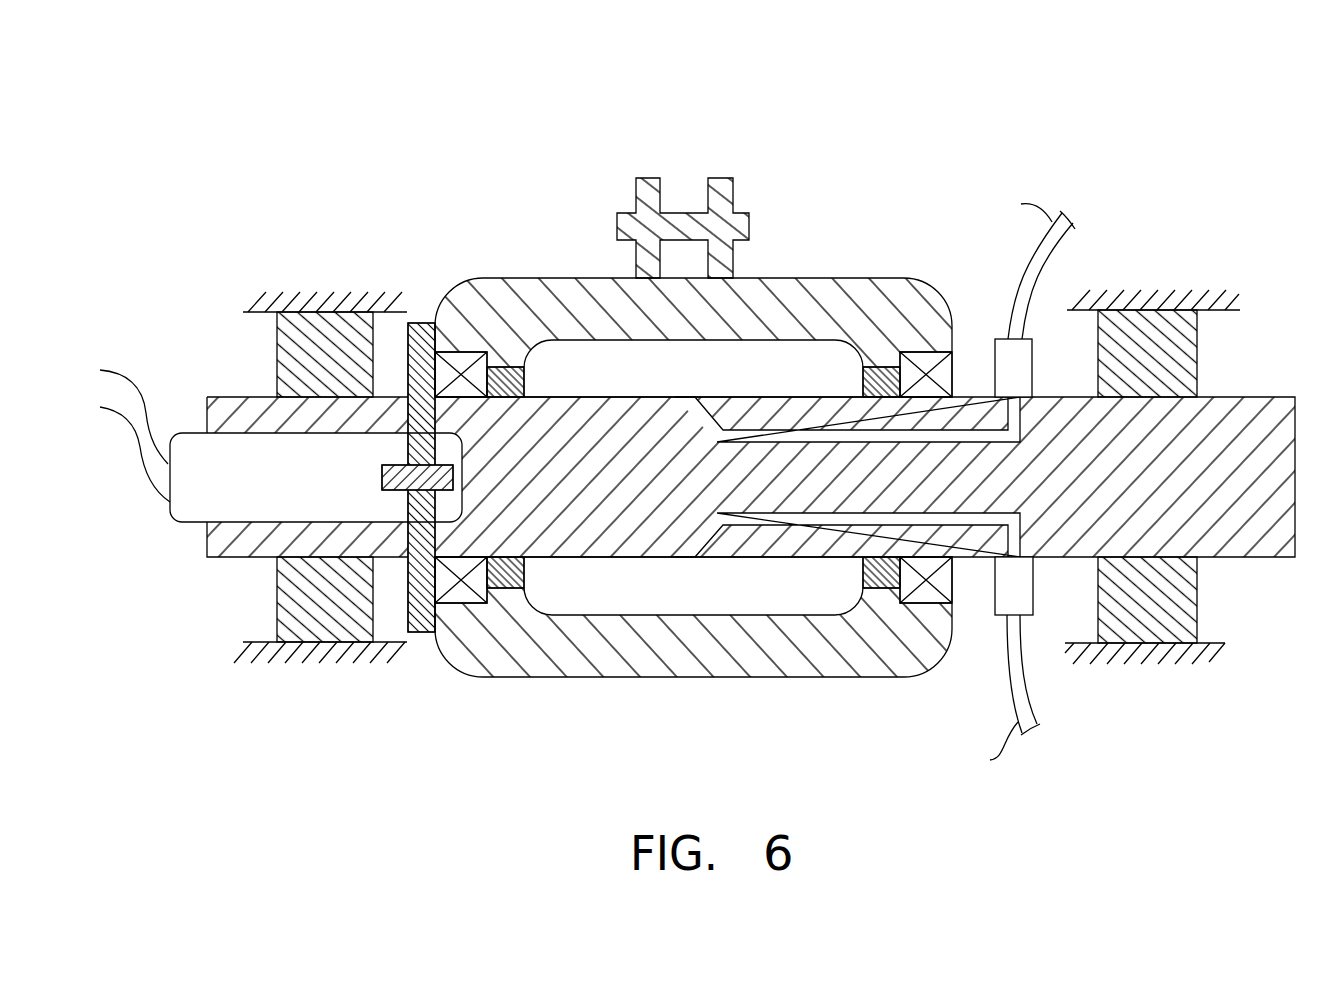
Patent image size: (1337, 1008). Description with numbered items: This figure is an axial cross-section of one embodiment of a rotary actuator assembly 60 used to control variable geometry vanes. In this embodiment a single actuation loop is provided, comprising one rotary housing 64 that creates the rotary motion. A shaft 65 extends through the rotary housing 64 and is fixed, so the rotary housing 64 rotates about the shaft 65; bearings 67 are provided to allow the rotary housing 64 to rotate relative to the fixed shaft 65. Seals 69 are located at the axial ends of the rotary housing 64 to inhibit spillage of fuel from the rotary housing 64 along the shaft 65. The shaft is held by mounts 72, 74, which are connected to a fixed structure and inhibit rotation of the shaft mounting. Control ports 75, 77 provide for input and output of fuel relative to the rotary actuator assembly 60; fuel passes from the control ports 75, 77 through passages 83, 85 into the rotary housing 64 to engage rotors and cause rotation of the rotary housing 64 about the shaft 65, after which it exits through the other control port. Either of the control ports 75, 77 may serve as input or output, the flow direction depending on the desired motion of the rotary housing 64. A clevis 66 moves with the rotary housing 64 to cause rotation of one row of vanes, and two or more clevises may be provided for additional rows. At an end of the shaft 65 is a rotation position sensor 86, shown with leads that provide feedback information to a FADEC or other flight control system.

The rotary actuator assembly 60 is at (1054, 122).
The rotary housing 64 is at (868, 253).
The shaft 65 is at (1247, 537).
The clevis 66 is at (769, 157).
The bearings 67 is at (463, 360).
The seals 69 is at (510, 385).
The mount 72 is at (289, 262).
The mount 74 is at (1147, 686).
The control port 75 is at (1030, 345).
The control port 77 is at (1003, 610).
The passage 83 is at (755, 435).
The passage 85 is at (768, 520).
The rotation position sensor 86 is at (198, 508).